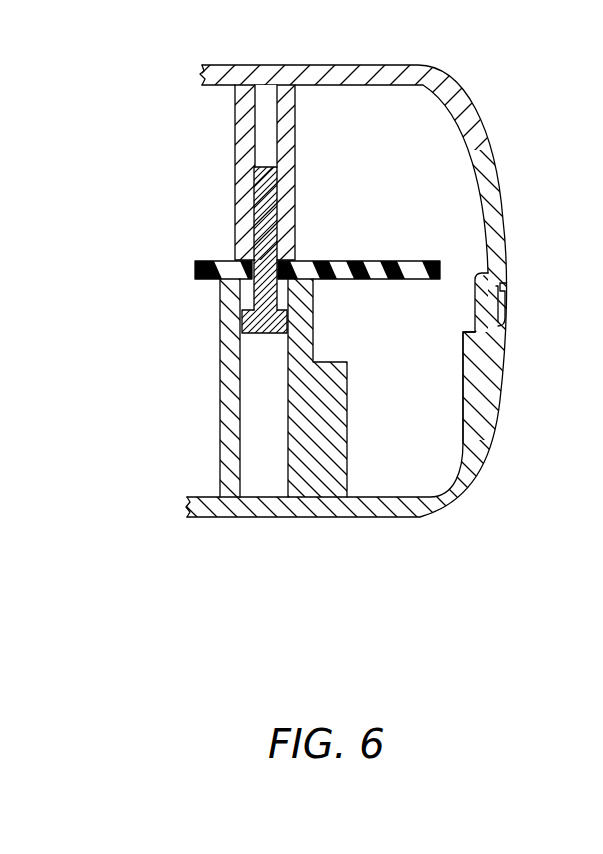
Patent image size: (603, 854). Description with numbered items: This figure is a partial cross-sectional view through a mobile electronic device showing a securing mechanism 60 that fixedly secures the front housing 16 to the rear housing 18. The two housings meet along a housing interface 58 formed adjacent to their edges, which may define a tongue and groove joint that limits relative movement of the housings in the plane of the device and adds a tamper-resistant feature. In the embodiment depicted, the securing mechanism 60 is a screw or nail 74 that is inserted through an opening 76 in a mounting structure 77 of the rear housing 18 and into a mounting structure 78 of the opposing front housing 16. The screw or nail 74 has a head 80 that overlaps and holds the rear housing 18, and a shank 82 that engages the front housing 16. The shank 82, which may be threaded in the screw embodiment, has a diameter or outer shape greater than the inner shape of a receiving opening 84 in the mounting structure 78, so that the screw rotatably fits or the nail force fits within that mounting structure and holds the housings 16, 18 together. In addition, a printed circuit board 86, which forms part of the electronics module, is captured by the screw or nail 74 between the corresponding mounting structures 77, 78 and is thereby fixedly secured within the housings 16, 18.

The front housing 16 is at (436, 80).
The rear housing 18 is at (488, 432).
The housing interface 58 is at (527, 280).
The securing mechanism 60 is at (146, 170).
The screw or nail 74 is at (262, 360).
The opening 76 is at (262, 508).
The mounting structure 77 is at (337, 462).
The mounting structure 78 is at (240, 137).
The head 80 is at (243, 323).
The shank 82 is at (255, 227).
The receiving opening 84 is at (270, 132).
The printed circuit board 86 is at (193, 271).